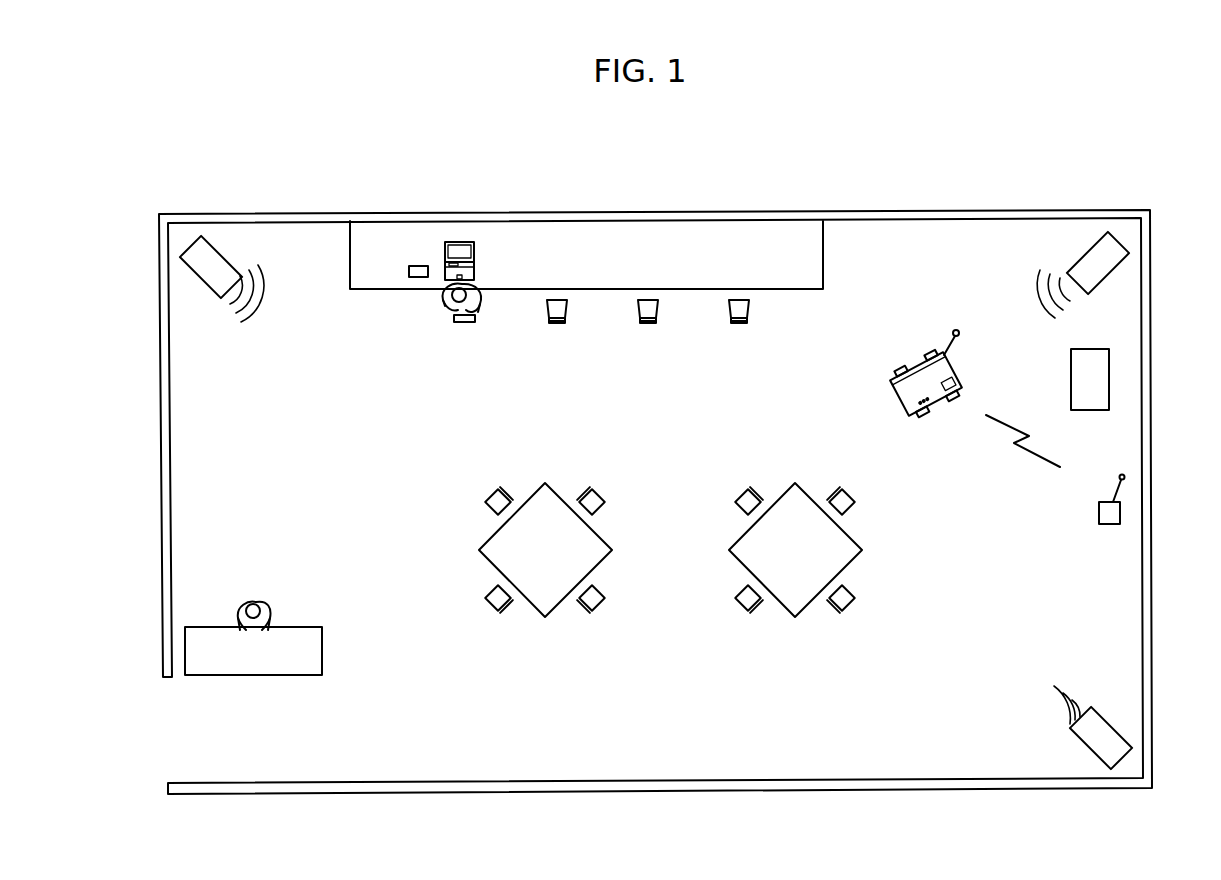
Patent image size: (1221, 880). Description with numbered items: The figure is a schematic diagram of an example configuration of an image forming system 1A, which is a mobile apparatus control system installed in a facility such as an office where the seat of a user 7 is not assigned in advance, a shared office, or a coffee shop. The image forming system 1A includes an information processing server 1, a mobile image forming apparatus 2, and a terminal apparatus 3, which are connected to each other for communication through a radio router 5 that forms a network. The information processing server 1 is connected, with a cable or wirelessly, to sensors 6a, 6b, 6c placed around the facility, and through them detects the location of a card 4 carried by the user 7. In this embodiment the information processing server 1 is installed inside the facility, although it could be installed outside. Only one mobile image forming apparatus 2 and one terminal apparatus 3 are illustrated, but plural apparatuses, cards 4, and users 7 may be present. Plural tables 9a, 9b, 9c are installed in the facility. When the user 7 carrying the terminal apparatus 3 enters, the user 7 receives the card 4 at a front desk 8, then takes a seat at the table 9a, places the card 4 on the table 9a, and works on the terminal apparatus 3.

The image forming system 1A is at (1050, 156).
The information processing server 1 is at (1109, 378).
The mobile image forming apparatus 2 is at (922, 345).
The terminal apparatus 3 is at (458, 240).
The card 4 is at (419, 264).
The radio router 5 is at (1120, 512).
The sensor 6a is at (222, 252).
The sensor 6b is at (1118, 238).
The sensor 6c is at (1112, 726).
The user 7 is at (446, 312).
The front desk 8 is at (250, 596).
The table 9a is at (695, 235).
The table 9b is at (529, 486).
The table 9c is at (779, 486).